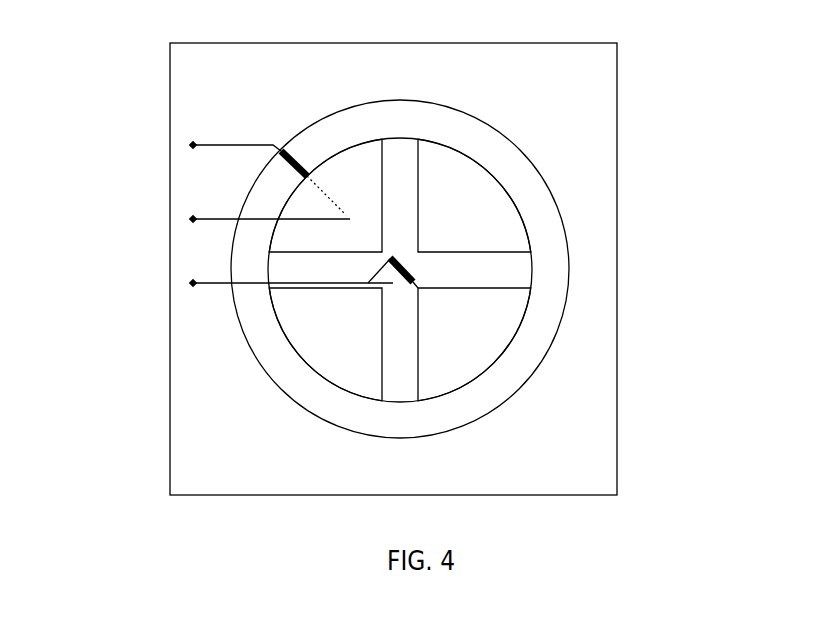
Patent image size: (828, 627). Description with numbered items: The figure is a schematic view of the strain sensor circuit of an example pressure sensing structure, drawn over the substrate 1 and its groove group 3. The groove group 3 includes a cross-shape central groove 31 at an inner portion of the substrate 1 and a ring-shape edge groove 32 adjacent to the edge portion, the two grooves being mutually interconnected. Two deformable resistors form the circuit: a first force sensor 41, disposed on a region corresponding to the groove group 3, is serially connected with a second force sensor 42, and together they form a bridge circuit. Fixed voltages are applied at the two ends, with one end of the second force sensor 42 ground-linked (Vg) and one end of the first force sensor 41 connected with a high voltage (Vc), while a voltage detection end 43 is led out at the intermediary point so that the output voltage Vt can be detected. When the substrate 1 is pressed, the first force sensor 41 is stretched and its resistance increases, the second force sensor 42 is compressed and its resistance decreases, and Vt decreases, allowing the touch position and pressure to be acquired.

The substrate 1 is at (600, 123).
The groove group 3 is at (509, 255).
The central groove 31 is at (497, 267).
The edge groove 32 is at (550, 233).
The first force sensor 41 is at (390, 262).
The second force sensor 42 is at (287, 158).
The voltage detection end 43 is at (348, 218).